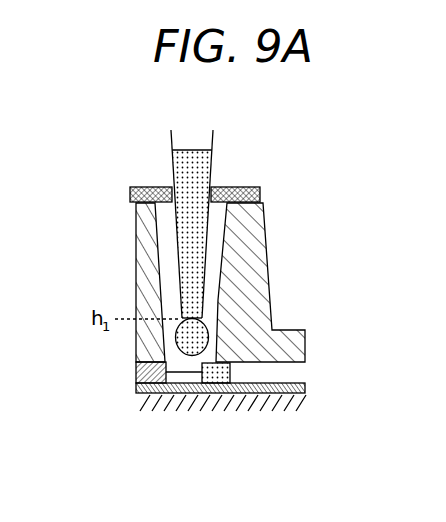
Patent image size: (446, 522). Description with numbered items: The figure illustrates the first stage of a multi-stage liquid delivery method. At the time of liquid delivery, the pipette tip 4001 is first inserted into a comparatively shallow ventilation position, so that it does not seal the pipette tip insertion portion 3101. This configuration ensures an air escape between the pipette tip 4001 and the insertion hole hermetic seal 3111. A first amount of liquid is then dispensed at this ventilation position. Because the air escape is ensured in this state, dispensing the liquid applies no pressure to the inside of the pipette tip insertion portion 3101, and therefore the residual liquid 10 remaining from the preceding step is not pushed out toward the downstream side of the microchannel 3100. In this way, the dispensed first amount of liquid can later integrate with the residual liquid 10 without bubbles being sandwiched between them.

The pipette tip 4001 is at (212, 148).
The insertion hole hermetic seal 3111 is at (260, 200).
The pipette tip insertion portion 3101 is at (212, 300).
The microchannel 3100 is at (298, 375).
The residual liquid 10 is at (140, 382).